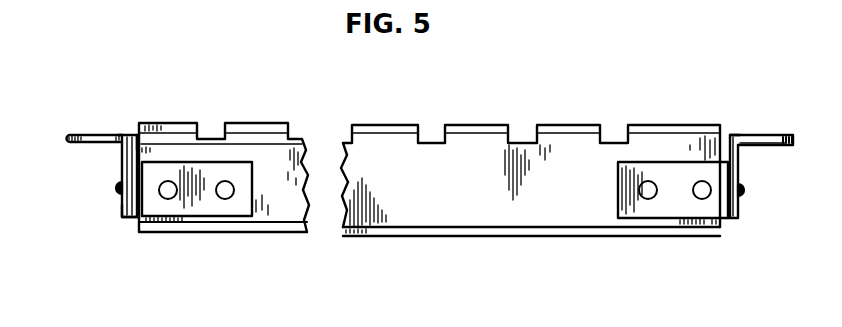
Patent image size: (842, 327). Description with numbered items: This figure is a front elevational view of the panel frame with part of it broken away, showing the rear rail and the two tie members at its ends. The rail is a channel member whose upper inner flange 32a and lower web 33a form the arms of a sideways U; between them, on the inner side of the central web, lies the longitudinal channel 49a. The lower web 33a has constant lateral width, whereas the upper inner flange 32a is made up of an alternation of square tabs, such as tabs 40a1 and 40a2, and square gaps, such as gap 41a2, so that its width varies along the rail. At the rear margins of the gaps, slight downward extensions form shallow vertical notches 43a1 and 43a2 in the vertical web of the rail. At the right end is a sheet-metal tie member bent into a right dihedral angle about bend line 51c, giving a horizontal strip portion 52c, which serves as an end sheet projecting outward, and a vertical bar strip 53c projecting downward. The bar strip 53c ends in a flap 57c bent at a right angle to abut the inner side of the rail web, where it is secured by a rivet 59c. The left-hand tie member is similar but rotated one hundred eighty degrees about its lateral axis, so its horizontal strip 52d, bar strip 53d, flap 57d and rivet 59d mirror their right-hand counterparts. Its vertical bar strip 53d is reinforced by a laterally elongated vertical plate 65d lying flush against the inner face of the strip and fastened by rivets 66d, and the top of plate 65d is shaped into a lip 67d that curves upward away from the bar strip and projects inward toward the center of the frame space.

The upper inner flange 32a is at (247, 128).
The lower web 33a is at (448, 242).
The tab 40a1 is at (660, 127).
The tab 40a2 is at (542, 130).
The gap 41a2 is at (432, 133).
The vertical notch 43a1 is at (618, 135).
The vertical notch 43a2 is at (518, 133).
The channel 49a is at (555, 205).
The bend line 51c is at (732, 133).
The horizontal strip portion 52c is at (782, 147).
The horizontal strip portion 52d is at (85, 135).
The bar strip 53c is at (740, 205).
The vertical bar strip 53d is at (130, 217).
The flap 57c is at (707, 208).
The flap 57d is at (238, 202).
The rivet 59c is at (648, 199).
The rivet 59d is at (222, 197).
The reinforcing plate 65d is at (138, 220).
The rivet 66d is at (117, 188).
The lip 67d is at (130, 135).